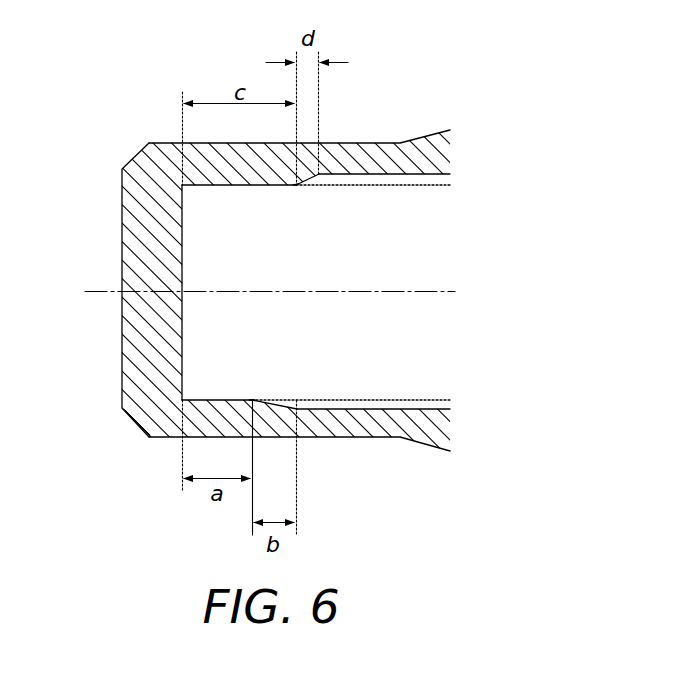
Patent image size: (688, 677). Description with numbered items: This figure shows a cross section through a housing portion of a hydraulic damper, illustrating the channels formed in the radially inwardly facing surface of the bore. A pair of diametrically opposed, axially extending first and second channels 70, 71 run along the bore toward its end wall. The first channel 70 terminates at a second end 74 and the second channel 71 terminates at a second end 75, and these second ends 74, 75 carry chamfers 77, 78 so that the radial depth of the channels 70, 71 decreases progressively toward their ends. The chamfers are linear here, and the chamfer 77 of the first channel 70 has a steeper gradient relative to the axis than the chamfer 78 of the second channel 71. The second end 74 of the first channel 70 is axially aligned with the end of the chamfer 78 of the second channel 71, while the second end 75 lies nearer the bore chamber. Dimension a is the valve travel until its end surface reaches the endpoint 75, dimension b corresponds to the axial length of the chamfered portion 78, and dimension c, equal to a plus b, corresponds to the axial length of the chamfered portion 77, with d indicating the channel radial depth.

The first channel 70 is at (393, 174).
The second channel 71 is at (395, 408).
The second end of the first channel 74 is at (296, 186).
The chamfer of the first channel 77 is at (311, 177).
The second end of the second channel 75 is at (252, 399).
The chamfer of the second channel 78 is at (284, 405).